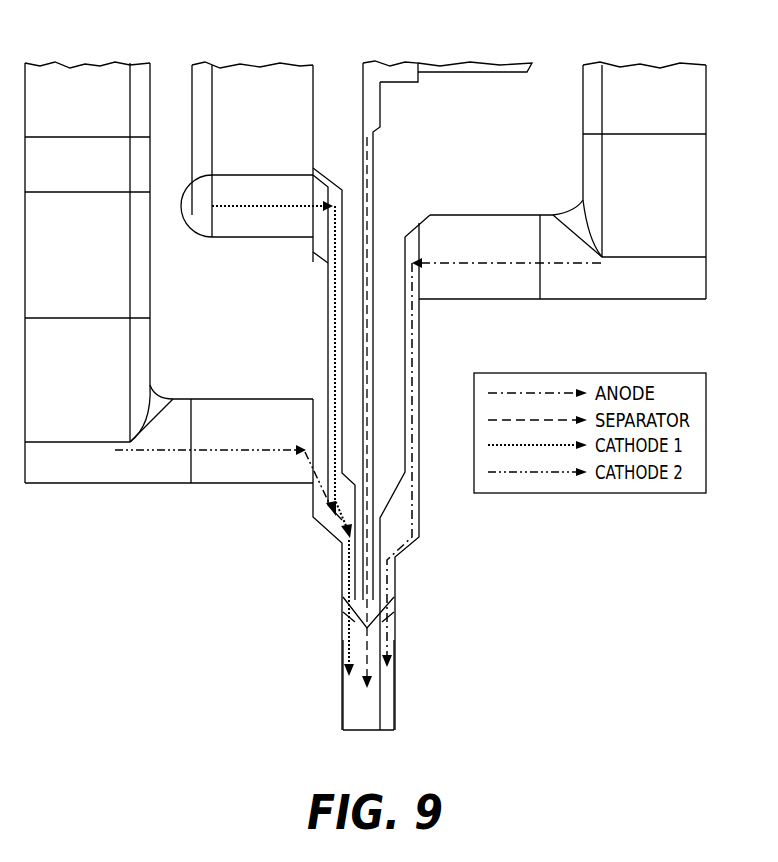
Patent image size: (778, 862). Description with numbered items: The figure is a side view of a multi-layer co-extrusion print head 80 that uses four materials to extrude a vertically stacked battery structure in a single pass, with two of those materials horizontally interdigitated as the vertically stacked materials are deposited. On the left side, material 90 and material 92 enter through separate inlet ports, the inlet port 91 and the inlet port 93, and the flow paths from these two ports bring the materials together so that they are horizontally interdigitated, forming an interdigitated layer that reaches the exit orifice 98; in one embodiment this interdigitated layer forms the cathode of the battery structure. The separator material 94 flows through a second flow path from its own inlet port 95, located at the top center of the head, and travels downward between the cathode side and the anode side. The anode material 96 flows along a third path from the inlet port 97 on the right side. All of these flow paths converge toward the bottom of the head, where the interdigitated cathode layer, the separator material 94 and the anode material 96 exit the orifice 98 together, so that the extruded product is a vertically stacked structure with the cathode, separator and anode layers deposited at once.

The multi-layer co-extrusion print head 80 is at (706, 83).
The material 90 is at (242, 452).
The inlet port 91 is at (61, 467).
The material 92 is at (330, 312).
The inlet port 93 is at (227, 188).
The separator material 94 is at (375, 196).
The inlet port 95 is at (365, 82).
The anode material 96 is at (398, 583).
The inlet port 97 is at (685, 288).
The exit orifice 98 is at (373, 730).